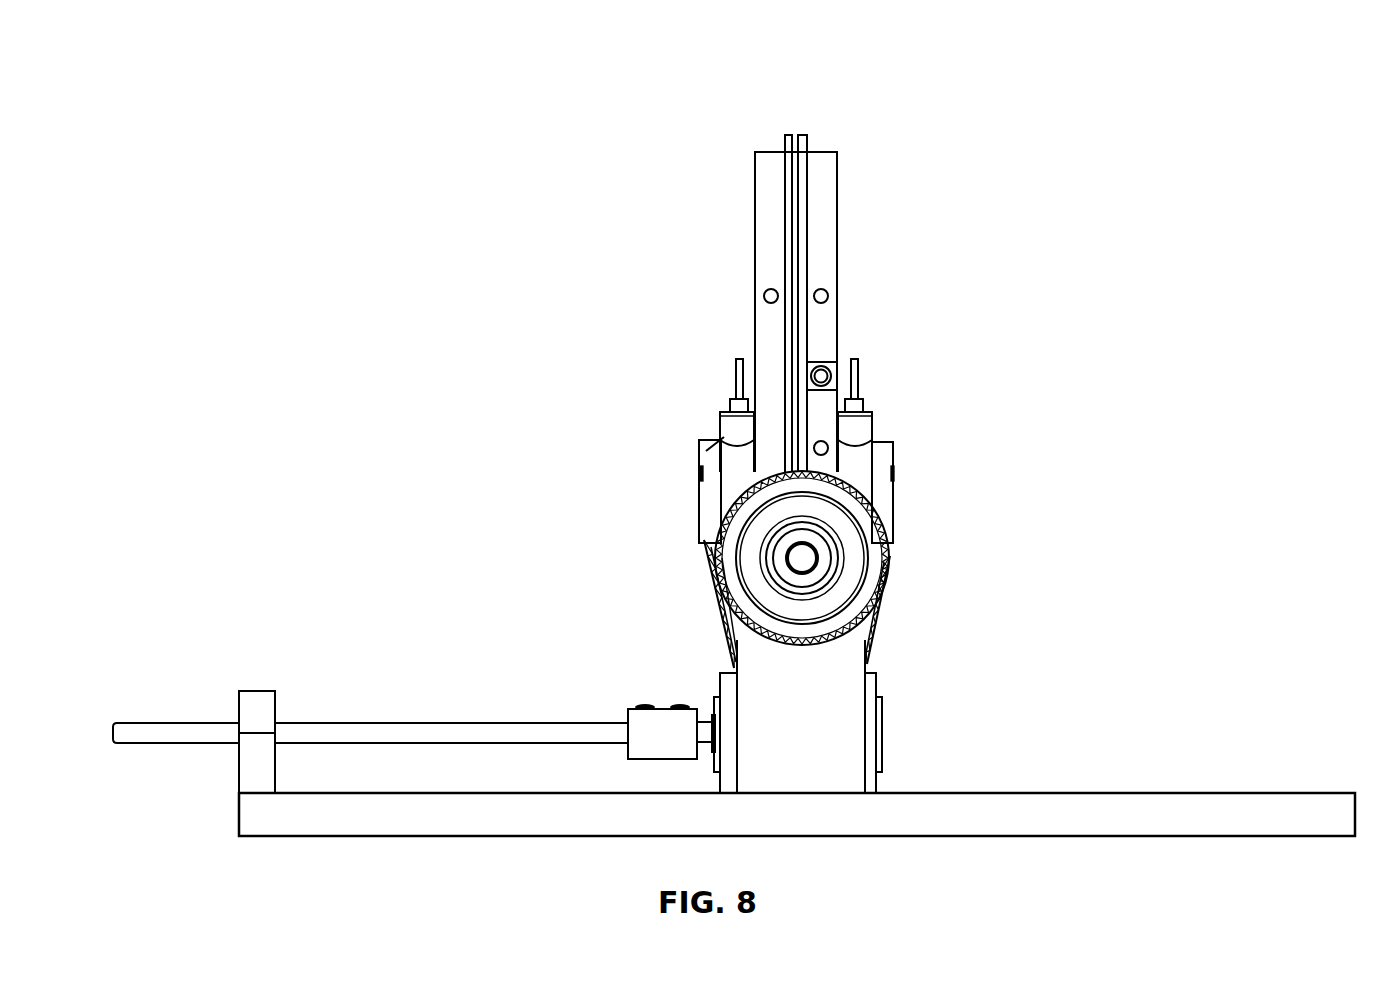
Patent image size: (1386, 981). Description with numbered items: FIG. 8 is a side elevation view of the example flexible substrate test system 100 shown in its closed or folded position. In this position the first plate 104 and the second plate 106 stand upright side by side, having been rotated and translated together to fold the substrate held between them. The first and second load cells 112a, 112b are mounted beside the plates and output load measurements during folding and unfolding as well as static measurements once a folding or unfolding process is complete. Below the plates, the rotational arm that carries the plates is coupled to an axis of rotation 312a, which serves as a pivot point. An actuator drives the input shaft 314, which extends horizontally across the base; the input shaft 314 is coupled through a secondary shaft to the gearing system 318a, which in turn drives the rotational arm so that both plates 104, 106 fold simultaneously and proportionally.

The flexible substrate test system 100 is at (582, 62).
The first plate 104 is at (804, 135).
The second plate 106 is at (788, 135).
The first load cell 112a is at (862, 458).
The second load cell 112b is at (718, 444).
The axis of rotation 312a is at (800, 560).
The input shaft 314 is at (453, 722).
The gearing system 318a is at (668, 508).